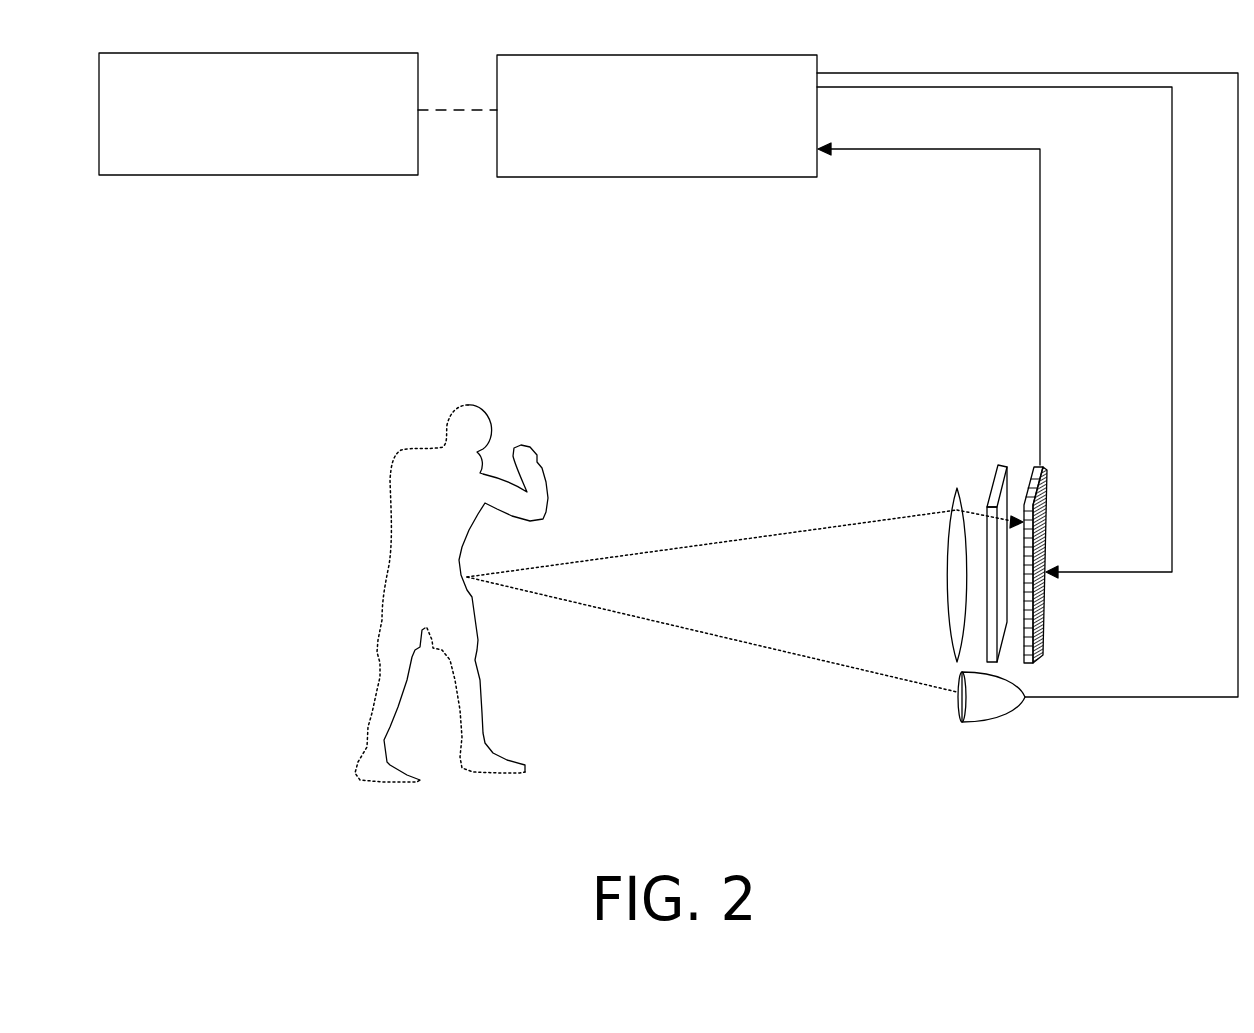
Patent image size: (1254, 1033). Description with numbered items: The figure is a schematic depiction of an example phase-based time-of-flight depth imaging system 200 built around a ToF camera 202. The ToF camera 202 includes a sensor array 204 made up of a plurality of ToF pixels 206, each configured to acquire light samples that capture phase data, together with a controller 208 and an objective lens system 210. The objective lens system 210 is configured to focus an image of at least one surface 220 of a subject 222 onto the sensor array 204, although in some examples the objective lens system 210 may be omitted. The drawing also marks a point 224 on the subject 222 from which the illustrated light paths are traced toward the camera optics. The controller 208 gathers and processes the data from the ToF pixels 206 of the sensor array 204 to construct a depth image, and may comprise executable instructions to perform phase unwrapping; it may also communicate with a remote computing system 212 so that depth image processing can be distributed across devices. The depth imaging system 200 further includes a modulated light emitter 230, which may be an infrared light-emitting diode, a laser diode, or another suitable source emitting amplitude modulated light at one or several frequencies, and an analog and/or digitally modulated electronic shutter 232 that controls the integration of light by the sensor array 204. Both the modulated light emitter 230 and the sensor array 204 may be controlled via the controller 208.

The depth imaging system 200 is at (168, 458).
The ToF camera 202 is at (880, 479).
The sensor array 204 is at (1052, 646).
The ToF pixels 206 is at (1030, 476).
The controller 208 is at (747, 128).
The objective lens system 210 is at (947, 600).
The remote computing system 212 is at (320, 141).
The surface 220 is at (482, 677).
The subject 222 is at (407, 569).
The point on subject 224 is at (467, 577).
The modulated light emitter 230 is at (974, 708).
The electronic shutter 232 is at (1007, 465).